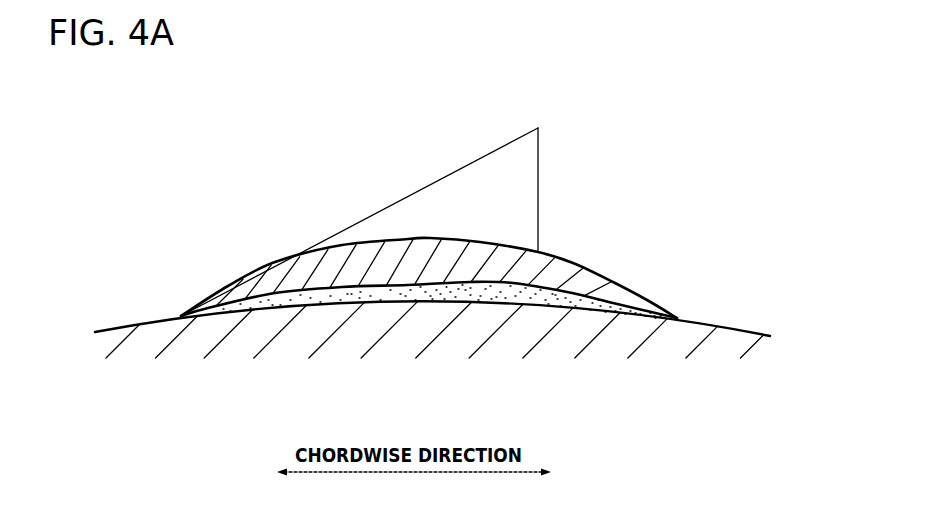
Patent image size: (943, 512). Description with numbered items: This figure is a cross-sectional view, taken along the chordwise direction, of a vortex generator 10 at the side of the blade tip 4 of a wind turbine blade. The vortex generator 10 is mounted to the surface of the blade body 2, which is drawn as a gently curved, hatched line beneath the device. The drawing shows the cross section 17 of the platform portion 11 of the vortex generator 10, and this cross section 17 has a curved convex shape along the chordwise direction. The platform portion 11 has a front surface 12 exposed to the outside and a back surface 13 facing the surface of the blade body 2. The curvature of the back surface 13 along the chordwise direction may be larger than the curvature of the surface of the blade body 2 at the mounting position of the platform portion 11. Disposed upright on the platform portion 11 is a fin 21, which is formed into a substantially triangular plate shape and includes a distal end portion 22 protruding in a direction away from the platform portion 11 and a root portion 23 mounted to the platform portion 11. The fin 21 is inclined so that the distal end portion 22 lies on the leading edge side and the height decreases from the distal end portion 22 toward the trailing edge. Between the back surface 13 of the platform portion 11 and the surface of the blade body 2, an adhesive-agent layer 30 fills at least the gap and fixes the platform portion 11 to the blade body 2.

The blade body 2 is at (742, 332).
The blade tip 4 is at (137, 343).
The vortex generator 10 is at (273, 152).
The platform portion 11 is at (628, 287).
The front surface 12 is at (575, 262).
The back surface 13 is at (590, 314).
The cross section 17 is at (234, 266).
The fin 21 is at (479, 158).
The distal end portion 22 is at (539, 127).
The root portion 23 is at (425, 245).
The adhesive-agent layer 30 is at (322, 294).